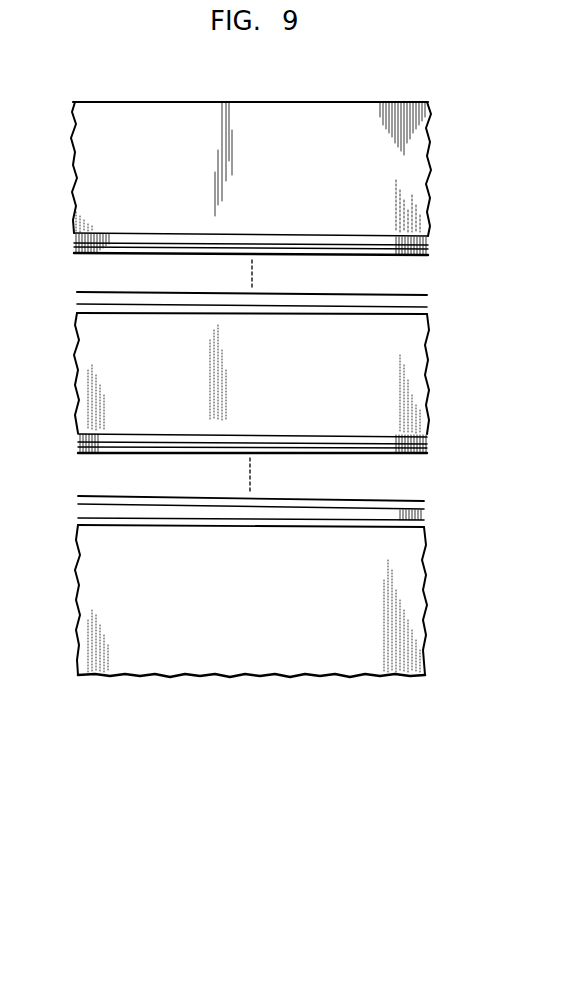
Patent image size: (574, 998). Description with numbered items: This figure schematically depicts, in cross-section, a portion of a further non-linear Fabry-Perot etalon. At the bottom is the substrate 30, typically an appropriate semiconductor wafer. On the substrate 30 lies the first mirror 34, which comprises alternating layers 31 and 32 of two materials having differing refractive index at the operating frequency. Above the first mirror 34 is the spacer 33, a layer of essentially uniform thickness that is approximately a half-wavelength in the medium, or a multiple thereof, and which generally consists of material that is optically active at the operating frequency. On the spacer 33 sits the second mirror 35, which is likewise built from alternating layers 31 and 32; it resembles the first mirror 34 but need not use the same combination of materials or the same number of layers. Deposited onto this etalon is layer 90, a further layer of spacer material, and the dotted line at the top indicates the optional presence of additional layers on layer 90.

The substrate 30 is at (415, 613).
The layer 31 is at (428, 251).
The layer 32 is at (428, 243).
The spacer 33 is at (425, 367).
The first mirror 34 is at (72, 433).
The second mirror 35 is at (74, 233).
The further layer of spacer material 90 is at (412, 130).